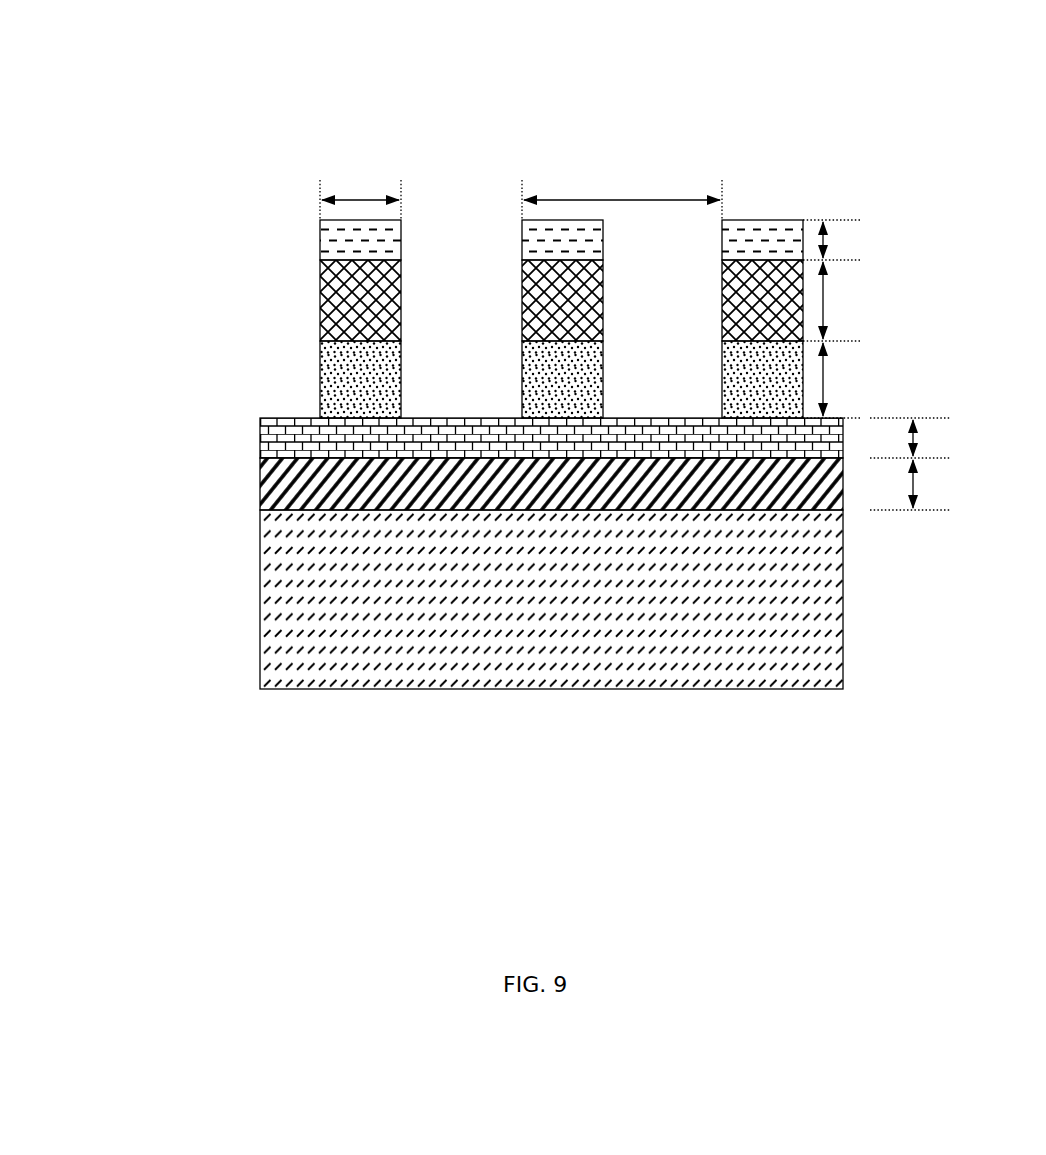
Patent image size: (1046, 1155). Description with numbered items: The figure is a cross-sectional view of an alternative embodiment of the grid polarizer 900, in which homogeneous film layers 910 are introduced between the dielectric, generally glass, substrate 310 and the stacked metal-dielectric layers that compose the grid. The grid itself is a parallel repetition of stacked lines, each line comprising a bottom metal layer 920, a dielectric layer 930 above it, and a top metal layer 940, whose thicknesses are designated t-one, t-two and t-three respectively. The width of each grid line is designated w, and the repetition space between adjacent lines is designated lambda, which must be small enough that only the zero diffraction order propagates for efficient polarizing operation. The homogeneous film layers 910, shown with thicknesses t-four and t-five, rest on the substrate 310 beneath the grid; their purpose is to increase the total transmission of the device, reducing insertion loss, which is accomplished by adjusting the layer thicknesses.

The grid polarizer 900 is at (456, 99).
The top metal layer 940 is at (306, 242).
The dielectric layer 930 is at (307, 297).
The bottom metal layer 920 is at (307, 380).
The homogeneous film layer 910 is at (249, 435).
The substrate 310 is at (252, 481).